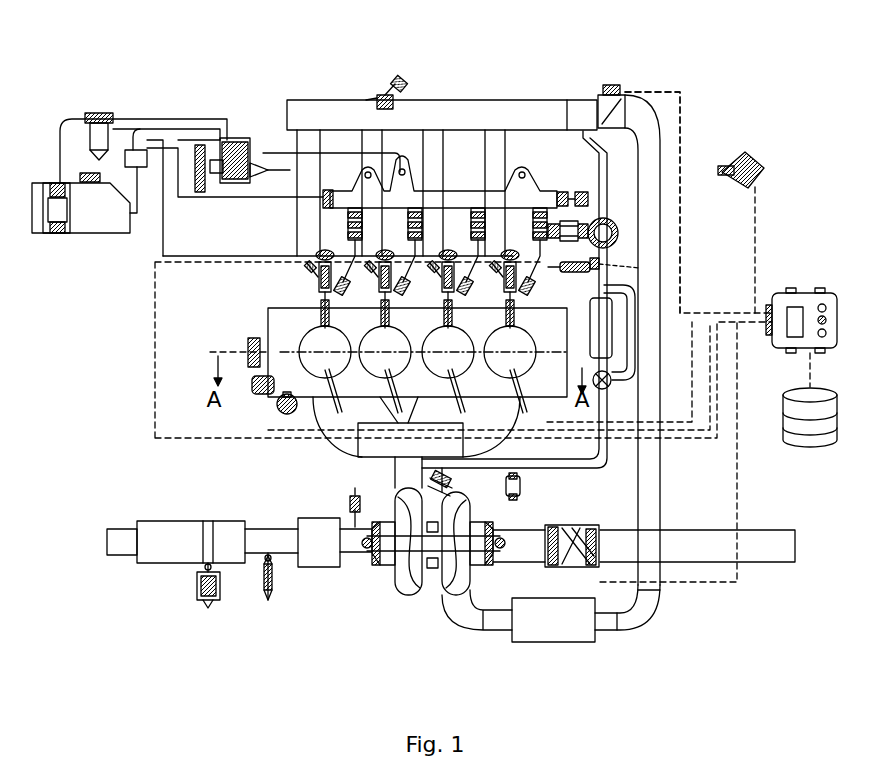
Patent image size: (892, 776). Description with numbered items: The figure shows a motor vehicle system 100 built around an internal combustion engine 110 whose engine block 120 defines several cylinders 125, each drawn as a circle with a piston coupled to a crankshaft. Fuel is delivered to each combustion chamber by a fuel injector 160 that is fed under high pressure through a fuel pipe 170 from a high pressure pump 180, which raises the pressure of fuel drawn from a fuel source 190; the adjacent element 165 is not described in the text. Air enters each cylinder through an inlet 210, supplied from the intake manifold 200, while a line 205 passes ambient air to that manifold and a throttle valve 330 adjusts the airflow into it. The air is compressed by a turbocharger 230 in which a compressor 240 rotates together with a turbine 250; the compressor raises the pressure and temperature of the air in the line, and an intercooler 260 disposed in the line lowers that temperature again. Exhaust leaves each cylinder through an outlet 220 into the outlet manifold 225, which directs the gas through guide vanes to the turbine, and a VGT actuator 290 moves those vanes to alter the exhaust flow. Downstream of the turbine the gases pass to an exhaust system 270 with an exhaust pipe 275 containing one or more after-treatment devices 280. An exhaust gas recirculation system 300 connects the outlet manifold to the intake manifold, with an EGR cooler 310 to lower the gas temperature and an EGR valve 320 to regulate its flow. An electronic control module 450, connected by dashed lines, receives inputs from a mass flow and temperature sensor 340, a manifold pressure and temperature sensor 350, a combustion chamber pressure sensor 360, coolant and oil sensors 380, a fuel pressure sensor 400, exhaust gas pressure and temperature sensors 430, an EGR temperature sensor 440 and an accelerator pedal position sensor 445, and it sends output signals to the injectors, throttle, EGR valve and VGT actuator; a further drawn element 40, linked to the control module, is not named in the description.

The motor vehicle system 100 is at (188, 75).
The internal combustion engine 110 is at (530, 93).
The engine block 120 is at (266, 310).
The cylinder 125 is at (567, 280).
The fuel injector 160 is at (318, 276).
The fuel injectors 165 is at (345, 226).
The fuel pipe 170 is at (325, 200).
The high pressure pump 180 is at (247, 135).
The fuel source 190 is at (105, 235).
The intake manifold 200 is at (423, 110).
The line 205 is at (660, 500).
The inlet 210 is at (262, 312).
The outlet 220 is at (315, 424).
The outlet manifold 225 is at (350, 504).
The turbocharger 230 is at (400, 616).
The compressor 240 is at (456, 600).
The turbine 250 is at (395, 577).
The intercooler 260 is at (549, 632).
The exhaust system 270 is at (182, 514).
The exhaust pipe 275 is at (120, 557).
The exhaust gas after-treatment device 280 is at (172, 563).
The VGT actuator 290 is at (450, 480).
The exhaust gas recirculation system 300 is at (564, 472).
The EGR cooler 310 is at (641, 383).
The EGR valve 320 is at (627, 212).
The throttle valve 330 is at (608, 88).
The mass flow and temperature sensor 340 is at (575, 570).
The pressure and temperature sensor for the manifold 350 is at (385, 76).
The combustion chamber pressure sensor 360 is at (358, 450).
The coolant fluid and oil sensors 380 is at (277, 405).
The fuel pressure sensor 400 is at (626, 127).
The exhaust gas pressure and temperature sensors 430 is at (268, 602).
The EGR temperature sensor 440 is at (640, 268).
The accelerator pedal position sensor 445 is at (766, 165).
The electronic control module 450 is at (812, 290).
The memory system 40 is at (814, 447).